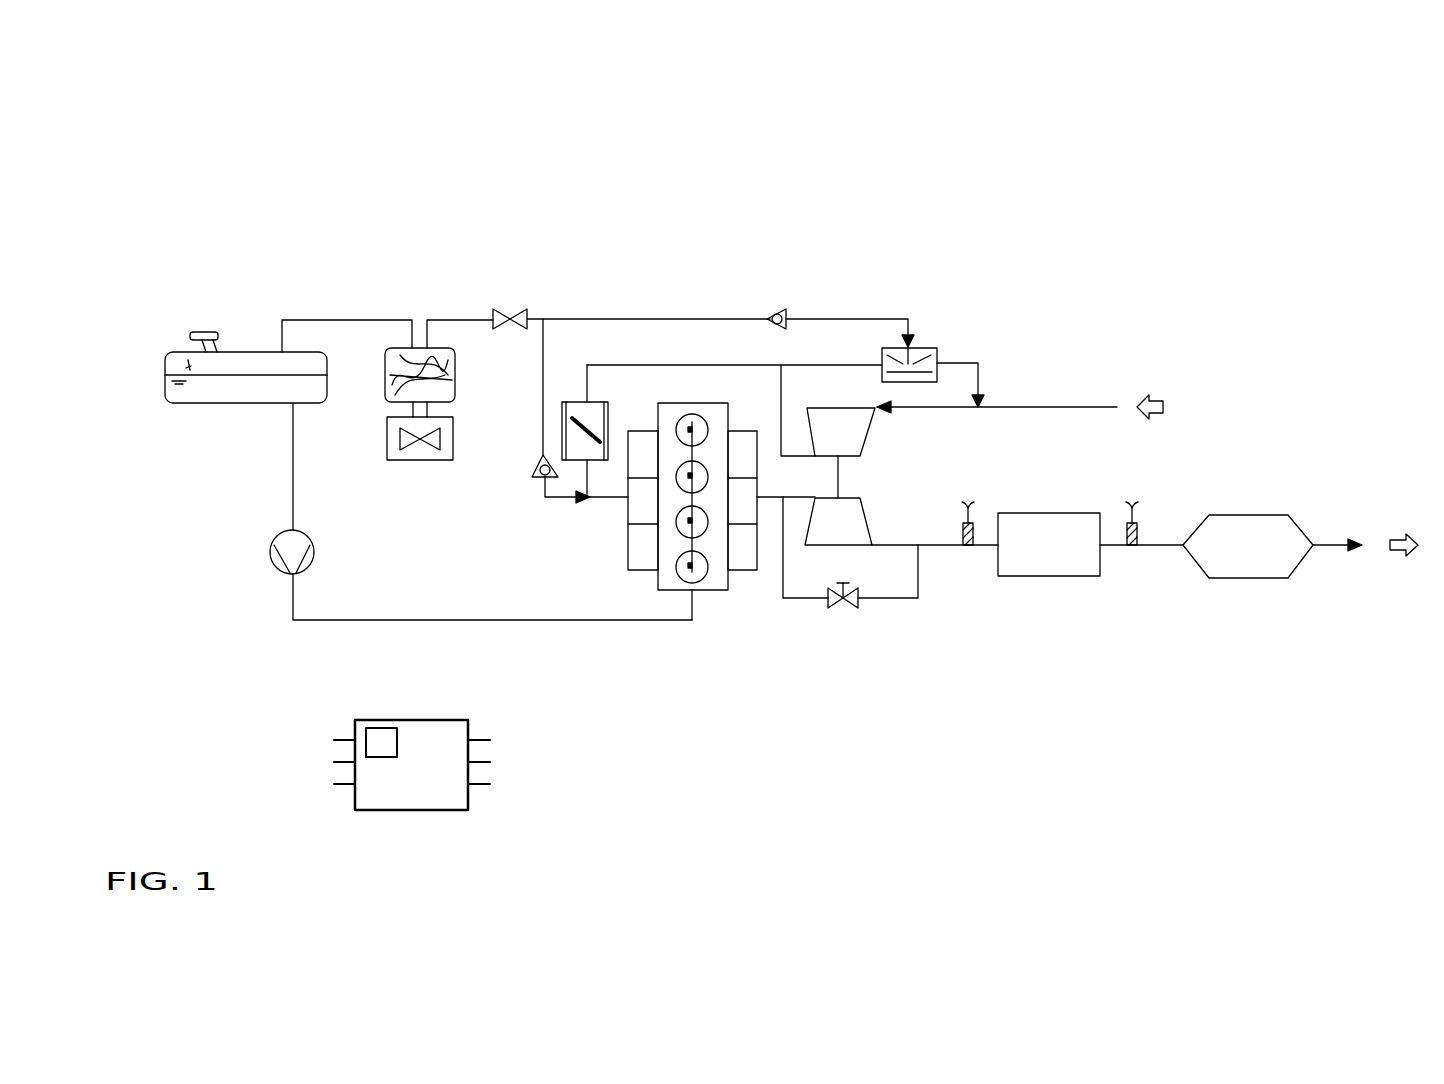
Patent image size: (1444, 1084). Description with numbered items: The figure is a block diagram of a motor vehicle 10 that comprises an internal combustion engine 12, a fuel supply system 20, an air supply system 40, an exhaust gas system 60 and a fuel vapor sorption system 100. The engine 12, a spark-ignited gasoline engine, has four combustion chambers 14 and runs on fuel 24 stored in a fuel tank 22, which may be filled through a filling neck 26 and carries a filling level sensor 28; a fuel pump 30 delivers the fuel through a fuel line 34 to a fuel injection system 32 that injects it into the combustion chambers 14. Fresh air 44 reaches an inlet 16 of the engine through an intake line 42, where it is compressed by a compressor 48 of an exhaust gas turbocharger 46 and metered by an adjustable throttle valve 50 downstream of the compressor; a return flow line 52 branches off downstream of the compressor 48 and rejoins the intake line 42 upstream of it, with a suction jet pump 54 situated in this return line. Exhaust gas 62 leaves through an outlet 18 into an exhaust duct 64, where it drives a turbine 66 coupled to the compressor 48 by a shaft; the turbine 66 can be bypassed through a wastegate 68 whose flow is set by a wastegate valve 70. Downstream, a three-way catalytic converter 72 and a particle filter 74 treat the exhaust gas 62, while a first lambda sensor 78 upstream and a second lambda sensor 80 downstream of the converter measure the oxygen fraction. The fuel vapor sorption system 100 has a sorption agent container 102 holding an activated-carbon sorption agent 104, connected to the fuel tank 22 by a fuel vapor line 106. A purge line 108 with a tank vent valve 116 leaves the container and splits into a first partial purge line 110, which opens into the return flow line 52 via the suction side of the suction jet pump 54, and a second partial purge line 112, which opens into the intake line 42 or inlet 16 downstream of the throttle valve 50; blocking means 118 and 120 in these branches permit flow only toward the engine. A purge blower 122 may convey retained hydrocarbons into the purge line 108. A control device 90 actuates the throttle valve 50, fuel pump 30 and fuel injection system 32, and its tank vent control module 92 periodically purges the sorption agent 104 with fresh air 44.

The motor vehicle 10 is at (1060, 185).
The internal combustion engine 12 is at (730, 611).
The combustion chambers 14 is at (694, 423).
The inlet 16 is at (628, 553).
The outlet 18 is at (757, 487).
The fuel supply system 20 is at (345, 510).
The fuel tank 22 is at (260, 352).
The fuel 24 is at (218, 393).
The filling neck 26 is at (204, 333).
The filling level sensor 28 is at (181, 364).
The fuel pump 30 is at (272, 557).
The fuel injection system 32 is at (685, 572).
The fuel line 34 is at (293, 466).
The air supply system 40 is at (1033, 337).
The intake line 42 is at (685, 365).
The fresh air 44 is at (1153, 403).
The exhaust gas turbocharger 46 is at (875, 475).
The compressor 48 is at (845, 437).
The throttle valve 50 is at (600, 420).
The return flow line 52 is at (822, 365).
The suction jet pump 54 is at (926, 347).
The exhaust gas system 60 is at (968, 665).
The exhaust gas 62 is at (1398, 539).
The exhaust duct 64 is at (795, 497).
The turbine 66 is at (843, 520).
The wastegate 68 is at (892, 598).
The wastegate valve 70 is at (833, 604).
The catalytic converter 72 is at (1061, 563).
The particle filter 74 is at (1278, 529).
The first lambda sensor 78 is at (968, 528).
The second lambda sensor 80 is at (1132, 528).
The control device 90 is at (442, 736).
The tank vent control module 92 is at (381, 736).
The fuel vapor sorption system 100 is at (485, 225).
The sorption agent container 102 is at (453, 358).
The sorption agent 104 is at (440, 386).
The fuel vapor line 106 is at (337, 320).
The purge line 108 is at (450, 320).
The first partial purge line 110 is at (635, 319).
The second partial purge line 112 is at (543, 350).
The tank vent valve 116 is at (517, 312).
The blocking means 118 is at (773, 312).
The blocking means 120 is at (537, 463).
The purge blower 122 is at (395, 440).